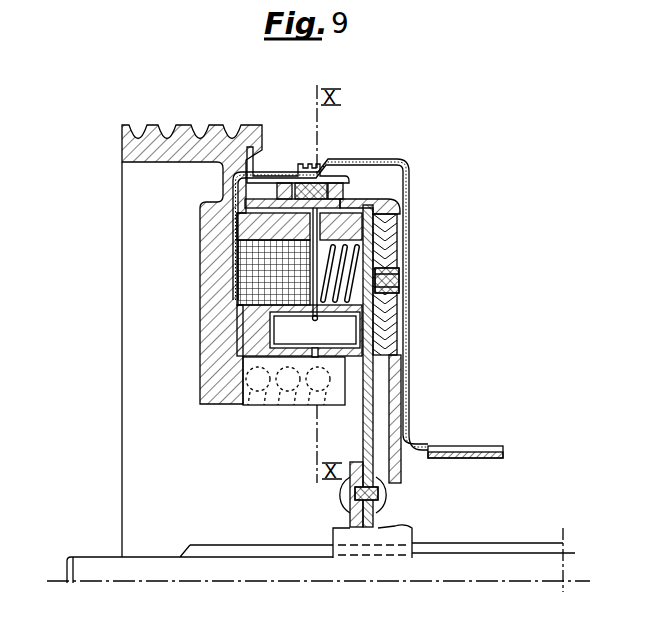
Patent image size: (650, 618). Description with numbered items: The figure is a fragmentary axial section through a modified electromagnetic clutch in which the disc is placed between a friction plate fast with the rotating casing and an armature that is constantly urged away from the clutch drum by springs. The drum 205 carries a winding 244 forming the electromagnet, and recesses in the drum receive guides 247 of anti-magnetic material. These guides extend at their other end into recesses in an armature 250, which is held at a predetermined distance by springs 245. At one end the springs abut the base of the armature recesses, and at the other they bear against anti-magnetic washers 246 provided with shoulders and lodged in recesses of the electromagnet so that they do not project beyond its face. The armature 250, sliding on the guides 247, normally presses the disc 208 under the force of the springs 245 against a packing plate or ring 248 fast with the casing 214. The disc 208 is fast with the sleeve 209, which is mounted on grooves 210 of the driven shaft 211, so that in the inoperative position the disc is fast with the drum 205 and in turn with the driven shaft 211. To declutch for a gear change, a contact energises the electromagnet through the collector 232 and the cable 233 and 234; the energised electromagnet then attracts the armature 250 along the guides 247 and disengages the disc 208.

The drum 205 is at (178, 138).
The disc 208 is at (372, 402).
The sleeve 209 is at (412, 528).
The grooves 210 is at (242, 548).
The driven shaft 211 is at (220, 570).
The casing 214 is at (400, 468).
The collector 232 is at (458, 447).
The cable 233 is at (372, 159).
The cable 234 is at (264, 172).
The winding 244 is at (247, 268).
The springs 245 is at (387, 256).
The washers 246 is at (344, 218).
The guides 247 is at (341, 338).
The packing plate or ring 248 is at (383, 330).
The armature 250 is at (396, 222).